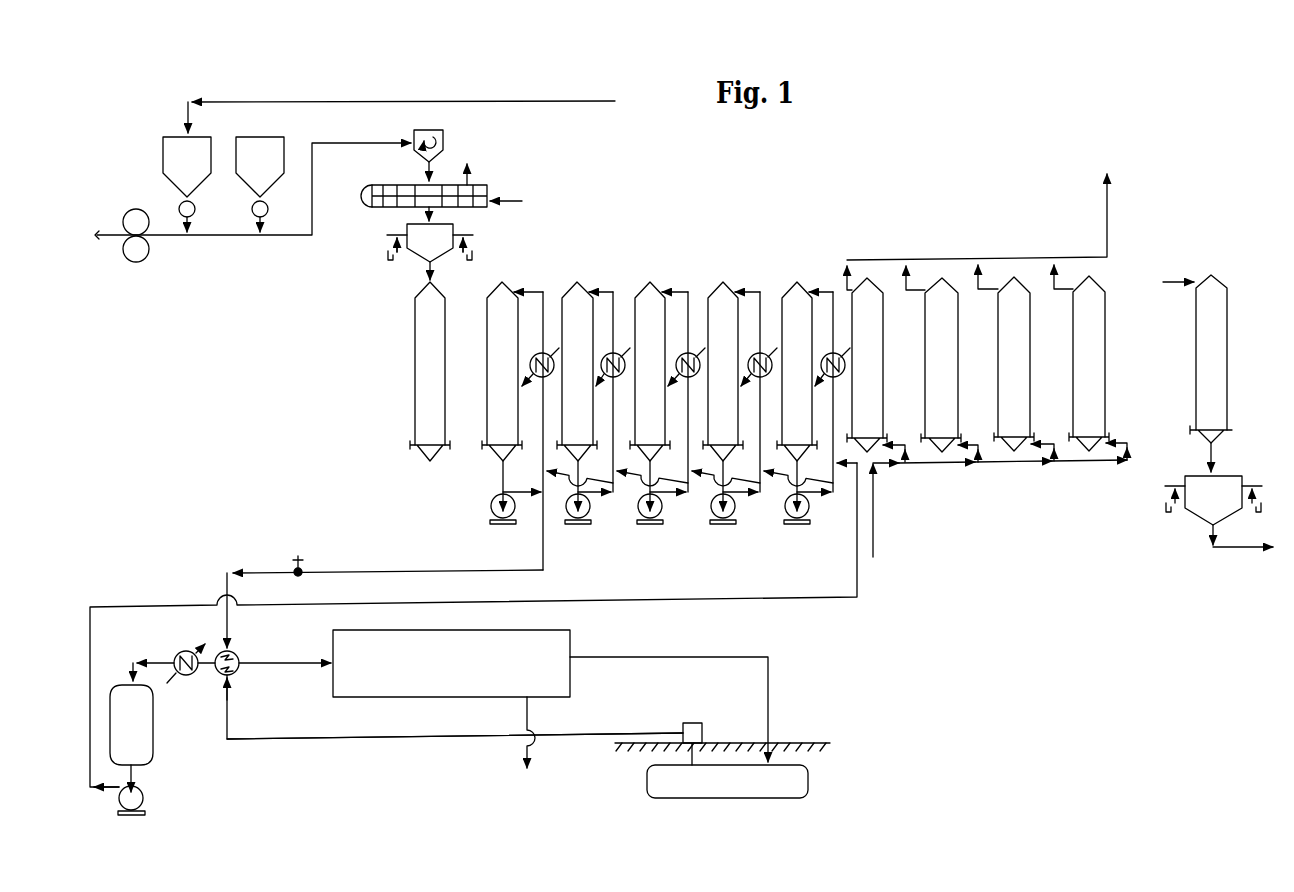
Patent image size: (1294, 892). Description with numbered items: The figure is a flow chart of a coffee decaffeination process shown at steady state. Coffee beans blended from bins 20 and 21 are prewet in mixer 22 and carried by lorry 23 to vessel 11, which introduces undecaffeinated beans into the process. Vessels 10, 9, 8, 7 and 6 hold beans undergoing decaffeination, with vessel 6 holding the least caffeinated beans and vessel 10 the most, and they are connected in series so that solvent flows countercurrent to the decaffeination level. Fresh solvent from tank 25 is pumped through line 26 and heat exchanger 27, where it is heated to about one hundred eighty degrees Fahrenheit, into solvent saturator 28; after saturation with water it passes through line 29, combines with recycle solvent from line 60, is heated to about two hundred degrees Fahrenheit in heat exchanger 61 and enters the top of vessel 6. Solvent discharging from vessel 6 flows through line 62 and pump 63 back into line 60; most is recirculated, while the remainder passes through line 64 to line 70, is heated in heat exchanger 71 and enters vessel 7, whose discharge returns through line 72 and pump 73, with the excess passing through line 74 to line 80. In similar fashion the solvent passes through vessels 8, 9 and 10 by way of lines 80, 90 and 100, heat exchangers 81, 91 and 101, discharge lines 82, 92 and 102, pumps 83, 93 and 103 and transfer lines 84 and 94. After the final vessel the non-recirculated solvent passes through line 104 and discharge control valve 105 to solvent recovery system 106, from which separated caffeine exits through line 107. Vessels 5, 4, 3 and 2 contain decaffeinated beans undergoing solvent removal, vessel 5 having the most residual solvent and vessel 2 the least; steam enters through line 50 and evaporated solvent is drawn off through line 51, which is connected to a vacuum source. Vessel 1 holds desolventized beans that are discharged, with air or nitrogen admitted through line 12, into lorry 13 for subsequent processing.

The vessel 1 is at (1204, 331).
The vessel 2 is at (1082, 336).
The vessel 3 is at (1007, 337).
The vessel 4 is at (935, 338).
The vessel 5 is at (860, 338).
The vessel 6 is at (790, 343).
The vessel 7 is at (716, 343).
The vessel 8 is at (643, 343).
The vessel 9 is at (570, 343).
The vessel 10 is at (492, 343).
The vessel 11 is at (420, 343).
The line 12 is at (1172, 282).
The lorry 13 is at (1202, 502).
The bin 20 is at (176, 167).
The bin 21 is at (249, 167).
The mixer 22 is at (468, 188).
The lorry 23 is at (419, 250).
The tank 25 is at (719, 794).
The line 26 is at (397, 736).
The heat exchanger 27 is at (178, 653).
The solvent saturator 28 is at (120, 732).
The line 29 is at (155, 607).
The line 50 is at (874, 545).
The line 51 is at (873, 259).
The line 60 is at (833, 408).
The heat exchanger 61 is at (850, 348).
The line 62 is at (799, 479).
The pump 63 is at (809, 514).
The line 64 is at (779, 477).
The line 70 is at (760, 408).
The heat exchanger 71 is at (777, 348).
The line 72 is at (725, 479).
The pump 73 is at (735, 514).
The line 74 is at (708, 477).
The line 80 is at (688, 408).
The heat exchanger 81 is at (705, 348).
The line 82 is at (652, 480).
The pump 83 is at (661, 514).
The line 84 is at (630, 477).
The line 90 is at (613, 408).
The heat exchanger 91 is at (630, 348).
The line 92 is at (580, 482).
The pump 93 is at (590, 514).
The line 94 is at (557, 477).
The line 100 is at (543, 407).
The heat exchanger 101 is at (559, 348).
The line 102 is at (503, 470).
The pump 103 is at (493, 512).
The line 104 is at (405, 571).
The discharge control valve 105 is at (298, 557).
The solvent recovery system 106 is at (418, 672).
The line 107 is at (527, 753).